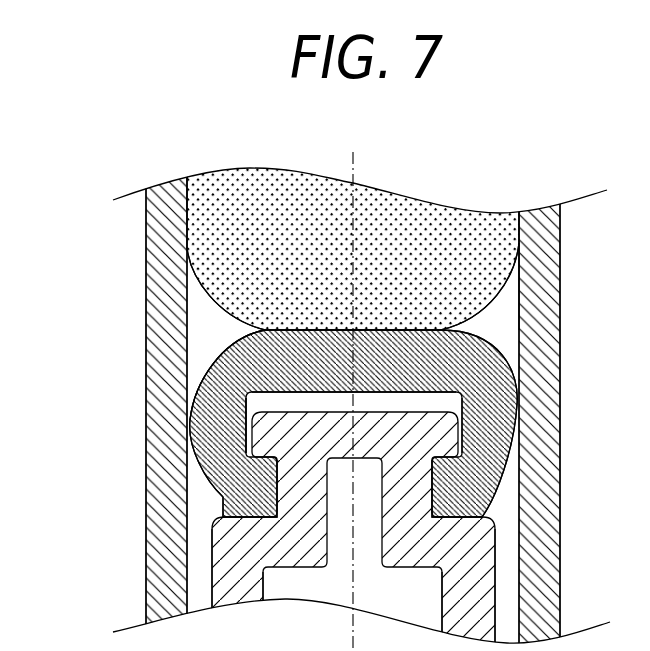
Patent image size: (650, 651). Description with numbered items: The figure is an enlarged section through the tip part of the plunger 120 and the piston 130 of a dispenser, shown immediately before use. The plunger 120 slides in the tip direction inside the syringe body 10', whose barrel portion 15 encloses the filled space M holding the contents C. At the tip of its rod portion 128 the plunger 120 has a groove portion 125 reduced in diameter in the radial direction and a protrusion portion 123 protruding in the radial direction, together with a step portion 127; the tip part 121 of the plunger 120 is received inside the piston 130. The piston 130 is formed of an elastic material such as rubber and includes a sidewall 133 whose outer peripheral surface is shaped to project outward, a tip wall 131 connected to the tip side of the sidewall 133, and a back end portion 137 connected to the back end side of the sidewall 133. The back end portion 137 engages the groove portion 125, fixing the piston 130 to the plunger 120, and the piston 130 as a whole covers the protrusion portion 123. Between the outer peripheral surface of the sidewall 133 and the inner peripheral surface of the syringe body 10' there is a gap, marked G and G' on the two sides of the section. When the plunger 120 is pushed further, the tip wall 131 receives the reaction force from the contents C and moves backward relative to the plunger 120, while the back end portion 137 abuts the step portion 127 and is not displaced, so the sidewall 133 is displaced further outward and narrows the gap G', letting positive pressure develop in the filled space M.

The syringe body 10' is at (290, 400).
The barrel portion 15 is at (550, 343).
The filled space M is at (334, 252).
The contents C is at (489, 250).
The gap G is at (494, 295).
The gap G' is at (226, 297).
The plunger 120 is at (450, 410).
The seal side portion 121 is at (290, 432).
The tip wall 131 is at (333, 330).
The piston 130 is at (368, 326).
The protrusion portion 123 is at (258, 437).
The sidewall 133 is at (490, 430).
The groove portion 125 is at (297, 493).
The back end portion 137 is at (470, 507).
The step portion 127 is at (250, 550).
The rod portion 128 is at (473, 590).